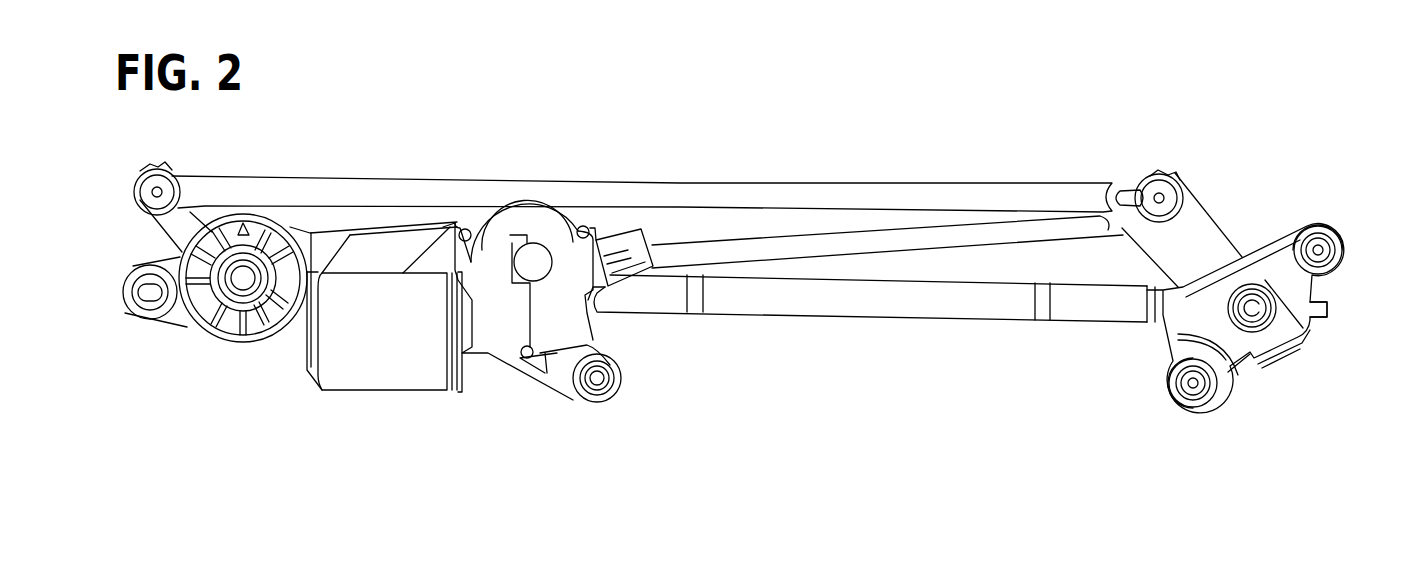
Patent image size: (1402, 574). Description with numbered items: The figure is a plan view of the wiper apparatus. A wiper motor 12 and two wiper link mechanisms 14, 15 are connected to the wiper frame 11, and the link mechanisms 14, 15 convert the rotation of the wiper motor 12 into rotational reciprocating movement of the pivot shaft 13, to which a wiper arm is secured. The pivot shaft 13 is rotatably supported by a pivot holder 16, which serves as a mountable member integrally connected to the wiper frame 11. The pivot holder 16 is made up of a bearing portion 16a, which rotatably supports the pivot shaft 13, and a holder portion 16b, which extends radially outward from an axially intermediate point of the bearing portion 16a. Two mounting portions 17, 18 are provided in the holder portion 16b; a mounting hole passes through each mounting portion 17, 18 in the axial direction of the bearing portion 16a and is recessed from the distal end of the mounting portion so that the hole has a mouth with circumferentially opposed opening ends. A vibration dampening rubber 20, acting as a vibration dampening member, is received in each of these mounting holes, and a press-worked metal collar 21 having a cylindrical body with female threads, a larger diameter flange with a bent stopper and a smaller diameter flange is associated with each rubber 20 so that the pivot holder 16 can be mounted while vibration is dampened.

The wiper frame 11 is at (888, 303).
The wiper motor 12 is at (398, 375).
The pivot shaft 13 is at (1258, 303).
The wiper link mechanism 14 is at (955, 190).
The wiper link mechanism 15 is at (890, 238).
The pivot holder 16 is at (1237, 319).
The bearing portion 16a is at (1248, 335).
The holder portion 16b is at (1293, 332).
The mounting portion 17 is at (1237, 370).
The mounting portion 18 is at (1327, 290).
The vibration dampening rubber 20 is at (1340, 245).
The collar 21 is at (1317, 233).